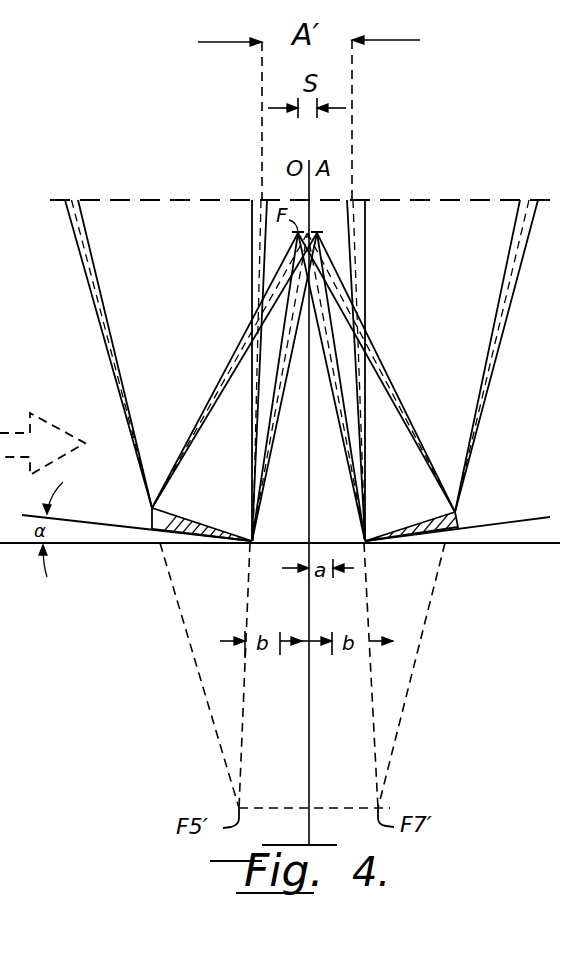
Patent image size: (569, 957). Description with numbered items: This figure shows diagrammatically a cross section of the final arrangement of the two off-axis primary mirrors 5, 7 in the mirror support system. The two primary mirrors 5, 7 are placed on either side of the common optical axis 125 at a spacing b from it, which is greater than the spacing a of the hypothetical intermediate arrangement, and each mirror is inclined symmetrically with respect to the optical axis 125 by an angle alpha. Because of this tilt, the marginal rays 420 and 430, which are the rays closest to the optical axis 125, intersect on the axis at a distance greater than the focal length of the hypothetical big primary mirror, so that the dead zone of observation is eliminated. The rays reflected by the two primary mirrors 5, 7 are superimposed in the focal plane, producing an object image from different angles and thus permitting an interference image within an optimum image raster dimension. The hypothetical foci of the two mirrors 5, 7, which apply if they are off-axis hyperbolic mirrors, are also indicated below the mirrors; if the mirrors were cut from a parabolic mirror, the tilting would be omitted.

The primary mirror 5 is at (192, 545).
The primary mirror 7 is at (416, 545).
The optical axis 125 is at (310, 766).
The marginal ray 420 is at (260, 183).
The marginal ray 430 is at (352, 172).